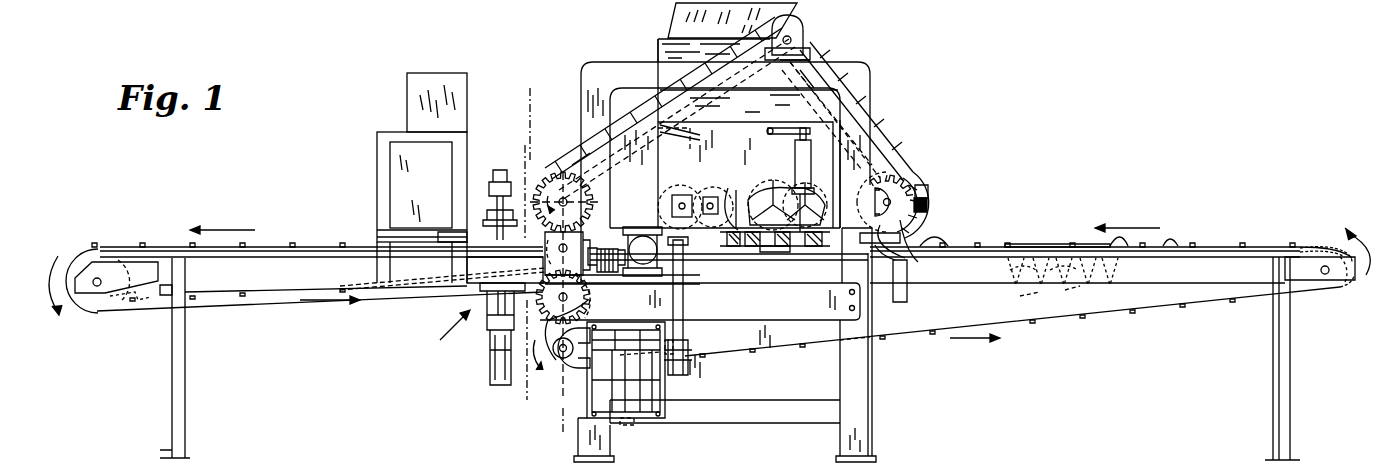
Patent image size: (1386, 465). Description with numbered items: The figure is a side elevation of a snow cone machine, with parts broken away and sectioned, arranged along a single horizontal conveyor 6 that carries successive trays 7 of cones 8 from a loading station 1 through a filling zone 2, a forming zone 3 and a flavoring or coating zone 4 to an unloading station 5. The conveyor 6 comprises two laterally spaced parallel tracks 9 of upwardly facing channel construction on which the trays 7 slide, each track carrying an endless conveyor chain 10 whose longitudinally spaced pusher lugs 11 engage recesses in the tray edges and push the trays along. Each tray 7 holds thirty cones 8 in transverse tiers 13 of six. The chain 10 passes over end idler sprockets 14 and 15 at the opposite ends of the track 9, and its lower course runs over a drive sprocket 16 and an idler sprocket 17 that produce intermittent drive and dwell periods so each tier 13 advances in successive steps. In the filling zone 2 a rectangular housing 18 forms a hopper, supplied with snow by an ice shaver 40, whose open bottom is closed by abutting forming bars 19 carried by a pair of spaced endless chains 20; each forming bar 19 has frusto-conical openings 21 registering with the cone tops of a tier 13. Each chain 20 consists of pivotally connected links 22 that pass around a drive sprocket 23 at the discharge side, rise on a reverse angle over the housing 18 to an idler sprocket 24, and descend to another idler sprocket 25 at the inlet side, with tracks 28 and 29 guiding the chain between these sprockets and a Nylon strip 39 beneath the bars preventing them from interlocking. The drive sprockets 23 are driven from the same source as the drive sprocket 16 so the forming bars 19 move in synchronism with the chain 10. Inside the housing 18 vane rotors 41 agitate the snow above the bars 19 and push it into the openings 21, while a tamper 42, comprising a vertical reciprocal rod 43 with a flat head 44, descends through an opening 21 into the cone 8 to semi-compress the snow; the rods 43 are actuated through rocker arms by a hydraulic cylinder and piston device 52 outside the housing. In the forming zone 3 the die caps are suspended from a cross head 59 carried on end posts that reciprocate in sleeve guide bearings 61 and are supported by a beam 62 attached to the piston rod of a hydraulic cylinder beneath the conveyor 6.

The loading station 1 is at (1272, 228).
The filling zone 2 is at (740, 154).
The forming zone 3 is at (528, 114).
The flavoring or coating zone 4 is at (432, 190).
The unloading station 5 is at (143, 230).
The conveyor 6 is at (1190, 246).
The tray 7 is at (1055, 250).
The cone 8 is at (1000, 288).
The track 9 is at (527, 156).
The conveyor chain 10 is at (1058, 320).
The pusher lug 11 is at (288, 298).
The tier 13 is at (1090, 292).
The end idler sprocket 14 is at (1340, 290).
The end idler sprocket 15 is at (110, 302).
The drive sprocket 16 is at (548, 312).
The idler sprocket 17 is at (558, 372).
The housing 18 is at (826, 165).
The forming bar 19 is at (630, 116).
The endless chain 20 is at (920, 207).
The opening 21 is at (792, 248).
The link 22 is at (910, 255).
The drive sprocket 23 is at (563, 175).
The idler sprocket 24 is at (810, 42).
The idler sprocket 25 is at (930, 190).
The track 28 is at (660, 128).
The track 29 is at (876, 130).
The Nylon strip 39 is at (635, 140).
The ice shaver 40 is at (752, 110).
The vane rotor 41 is at (688, 185).
The tamper 42 is at (736, 250).
The rod 43 is at (730, 190).
The flat head 44 is at (720, 232).
The hydraulic cylinder and piston device 52 is at (812, 150).
The cross head 59 is at (495, 182).
The sleeve guide bearing 61 is at (442, 271).
The beam 62 is at (490, 350).